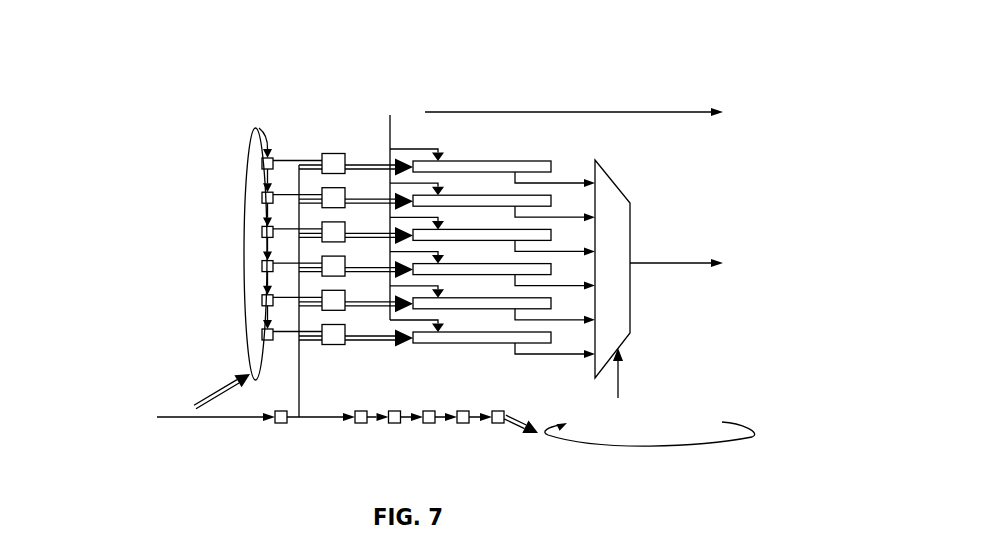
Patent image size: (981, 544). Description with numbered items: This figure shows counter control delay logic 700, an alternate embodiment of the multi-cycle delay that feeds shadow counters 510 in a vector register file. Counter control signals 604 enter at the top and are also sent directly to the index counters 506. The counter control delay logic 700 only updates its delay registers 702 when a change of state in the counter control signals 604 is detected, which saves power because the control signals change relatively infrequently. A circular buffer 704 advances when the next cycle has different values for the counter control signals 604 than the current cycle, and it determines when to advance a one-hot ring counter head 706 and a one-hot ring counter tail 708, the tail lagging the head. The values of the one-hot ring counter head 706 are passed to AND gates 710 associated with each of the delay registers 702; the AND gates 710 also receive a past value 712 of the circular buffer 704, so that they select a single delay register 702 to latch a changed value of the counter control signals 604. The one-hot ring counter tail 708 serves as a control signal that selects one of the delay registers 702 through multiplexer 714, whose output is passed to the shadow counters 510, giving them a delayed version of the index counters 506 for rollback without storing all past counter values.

The counter control delay logic 700 is at (189, 54).
The counter control signals 604 is at (400, 62).
The AND gates 710 is at (336, 150).
The one-hot ring counter head 706 is at (240, 189).
The circular buffer 704 is at (149, 383).
The past value 712 is at (312, 418).
The delay registers 702 is at (537, 158).
The multiplexer 714 is at (630, 241).
The one-hot ring counter tail 708 is at (713, 397).
The index counters 506 is at (757, 148).
The shadow counters 510 is at (757, 295).